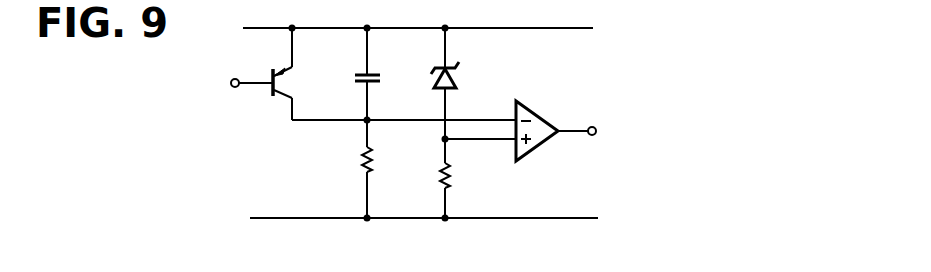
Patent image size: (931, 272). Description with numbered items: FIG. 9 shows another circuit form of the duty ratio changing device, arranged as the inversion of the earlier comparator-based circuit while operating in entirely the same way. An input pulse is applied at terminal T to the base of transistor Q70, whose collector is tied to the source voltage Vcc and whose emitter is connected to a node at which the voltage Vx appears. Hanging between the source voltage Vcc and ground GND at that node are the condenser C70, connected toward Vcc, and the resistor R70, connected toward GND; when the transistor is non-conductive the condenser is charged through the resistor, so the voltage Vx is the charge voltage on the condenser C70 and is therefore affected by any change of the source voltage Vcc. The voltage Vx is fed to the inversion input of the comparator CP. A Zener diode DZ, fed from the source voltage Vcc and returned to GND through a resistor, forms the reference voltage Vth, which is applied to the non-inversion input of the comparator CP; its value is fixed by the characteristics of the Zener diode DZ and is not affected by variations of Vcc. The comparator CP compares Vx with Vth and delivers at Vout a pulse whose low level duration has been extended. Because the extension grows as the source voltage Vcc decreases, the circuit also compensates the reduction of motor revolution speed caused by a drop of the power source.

The transistor Q70 is at (280, 93).
The condenser C70 is at (357, 72).
The resistor R70 is at (360, 158).
The Zener diode DZ is at (455, 80).
The comparator CP is at (536, 112).
The input terminal T is at (240, 84).
The source voltage Vcc is at (440, 27).
The ground GND is at (453, 219).
The voltage Vx is at (371, 118).
The reference voltage Vth is at (449, 143).
The output Vout is at (607, 132).